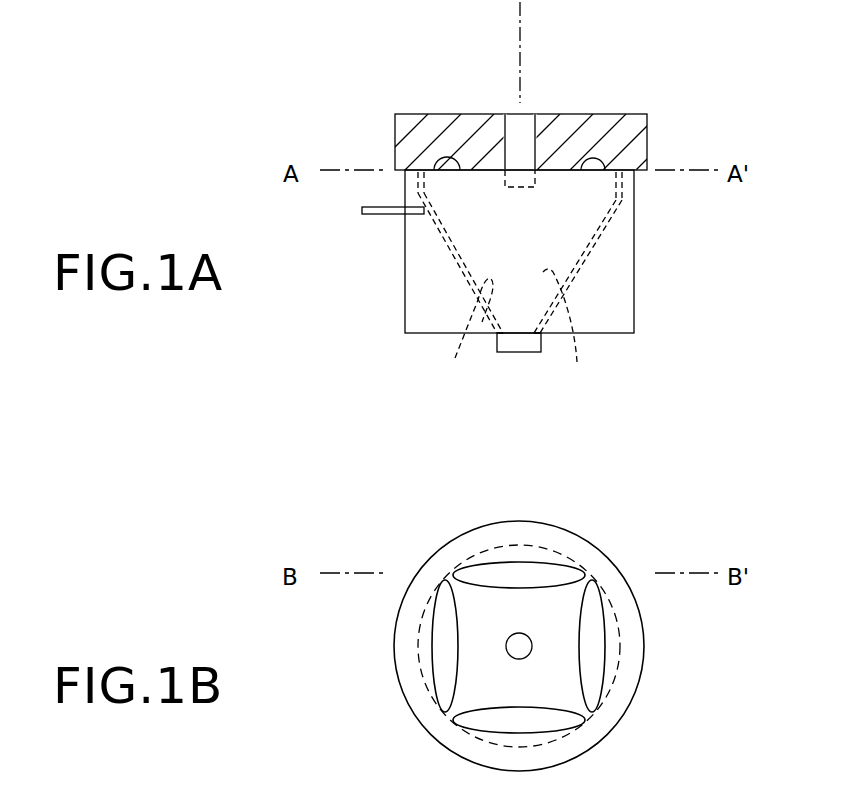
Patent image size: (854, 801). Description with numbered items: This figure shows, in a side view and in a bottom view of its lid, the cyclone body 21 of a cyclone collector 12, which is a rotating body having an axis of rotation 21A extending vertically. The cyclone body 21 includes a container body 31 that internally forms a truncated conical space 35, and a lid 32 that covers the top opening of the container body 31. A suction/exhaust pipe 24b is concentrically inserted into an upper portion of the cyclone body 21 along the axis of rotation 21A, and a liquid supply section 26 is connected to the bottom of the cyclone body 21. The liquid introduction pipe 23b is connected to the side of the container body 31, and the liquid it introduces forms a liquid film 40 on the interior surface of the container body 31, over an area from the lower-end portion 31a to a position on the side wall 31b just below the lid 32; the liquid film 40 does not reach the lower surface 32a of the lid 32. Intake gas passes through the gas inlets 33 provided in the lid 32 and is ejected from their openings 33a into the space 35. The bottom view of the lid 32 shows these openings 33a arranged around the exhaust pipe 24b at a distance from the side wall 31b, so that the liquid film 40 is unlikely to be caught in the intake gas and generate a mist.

In FIG. 1A, the cyclone collector 12 is at (362, 108).
In FIG. 1A, the cyclone body 21 is at (392, 325).
In FIG. 1B, the cyclone body 21 is at (381, 711).
In FIG. 1A, the axis of rotation 21A is at (520, 45).
In FIG. 1A, the lid 32 is at (604, 113).
In FIG. 1B, the lid 32 is at (632, 647).
In FIG. 1A, the suction/exhaust pipe 24b is at (513, 113).
In FIG. 1B, the suction/exhaust pipe 24b is at (514, 645).
In FIG. 1A, the lower surface of the lid 32a is at (486, 173).
In FIG. 1A, the gas inlets 33 is at (592, 172).
In FIG. 1B, the openings of the gas inlets 33a is at (602, 683).
In FIG. 1A, the liquid introduction pipe 23b is at (373, 218).
In FIG. 1A, the container body 31 is at (569, 326).
In FIG. 1A, the lower-end portion of the container body 31a is at (537, 345).
In FIG. 1A, the side wall of the container body 31b is at (601, 215).
In FIG. 1A, the space 35 is at (547, 268).
In FIG. 1A, the liquid film 40 is at (507, 332).
In FIG. 1A, the liquid supply section 26 is at (508, 346).